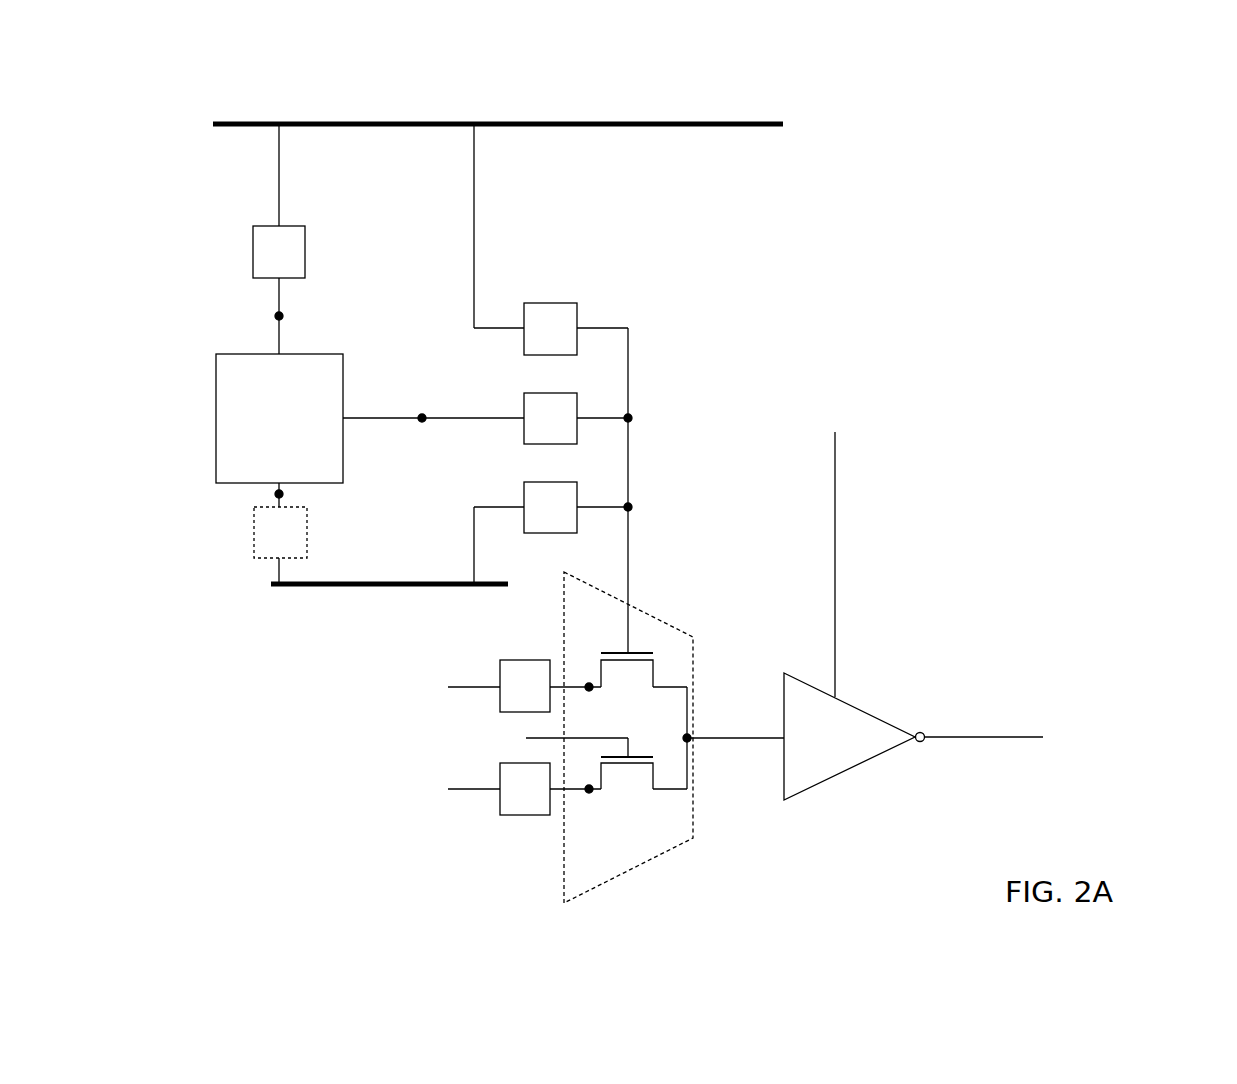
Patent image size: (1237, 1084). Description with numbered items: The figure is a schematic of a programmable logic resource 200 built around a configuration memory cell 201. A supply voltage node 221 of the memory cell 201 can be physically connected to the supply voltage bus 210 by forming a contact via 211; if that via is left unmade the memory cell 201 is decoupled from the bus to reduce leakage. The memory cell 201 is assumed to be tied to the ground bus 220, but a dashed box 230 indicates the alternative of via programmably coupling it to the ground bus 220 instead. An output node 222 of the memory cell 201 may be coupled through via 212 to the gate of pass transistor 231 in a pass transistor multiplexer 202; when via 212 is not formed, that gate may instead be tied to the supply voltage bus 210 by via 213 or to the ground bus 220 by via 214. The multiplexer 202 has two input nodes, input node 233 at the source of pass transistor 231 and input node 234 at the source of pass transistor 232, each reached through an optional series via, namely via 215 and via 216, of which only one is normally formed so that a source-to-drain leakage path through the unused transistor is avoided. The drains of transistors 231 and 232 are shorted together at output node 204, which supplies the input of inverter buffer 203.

The programmable logic resource 200 is at (1110, 101).
The configuration memory cell 201 is at (297, 455).
The pass transistor multiplexer 202 is at (659, 615).
The inverter buffer 203 is at (863, 763).
The output node 204 is at (687, 740).
The supply voltage bus 210 is at (750, 121).
The contact via 211 is at (297, 264).
The via 212 is at (568, 430).
The via 213 is at (568, 342).
The via 214 is at (568, 518).
The via 215 is at (543, 698).
The via 216 is at (543, 800).
The ground bus 220 is at (318, 587).
The supply voltage node 221 is at (279, 316).
The output node 222 is at (422, 418).
The dashed box 230 is at (307, 525).
The pass transistor 231 is at (626, 686).
The pass transistor 232 is at (626, 788).
The input node 233 is at (589, 688).
The input node 234 is at (589, 790).